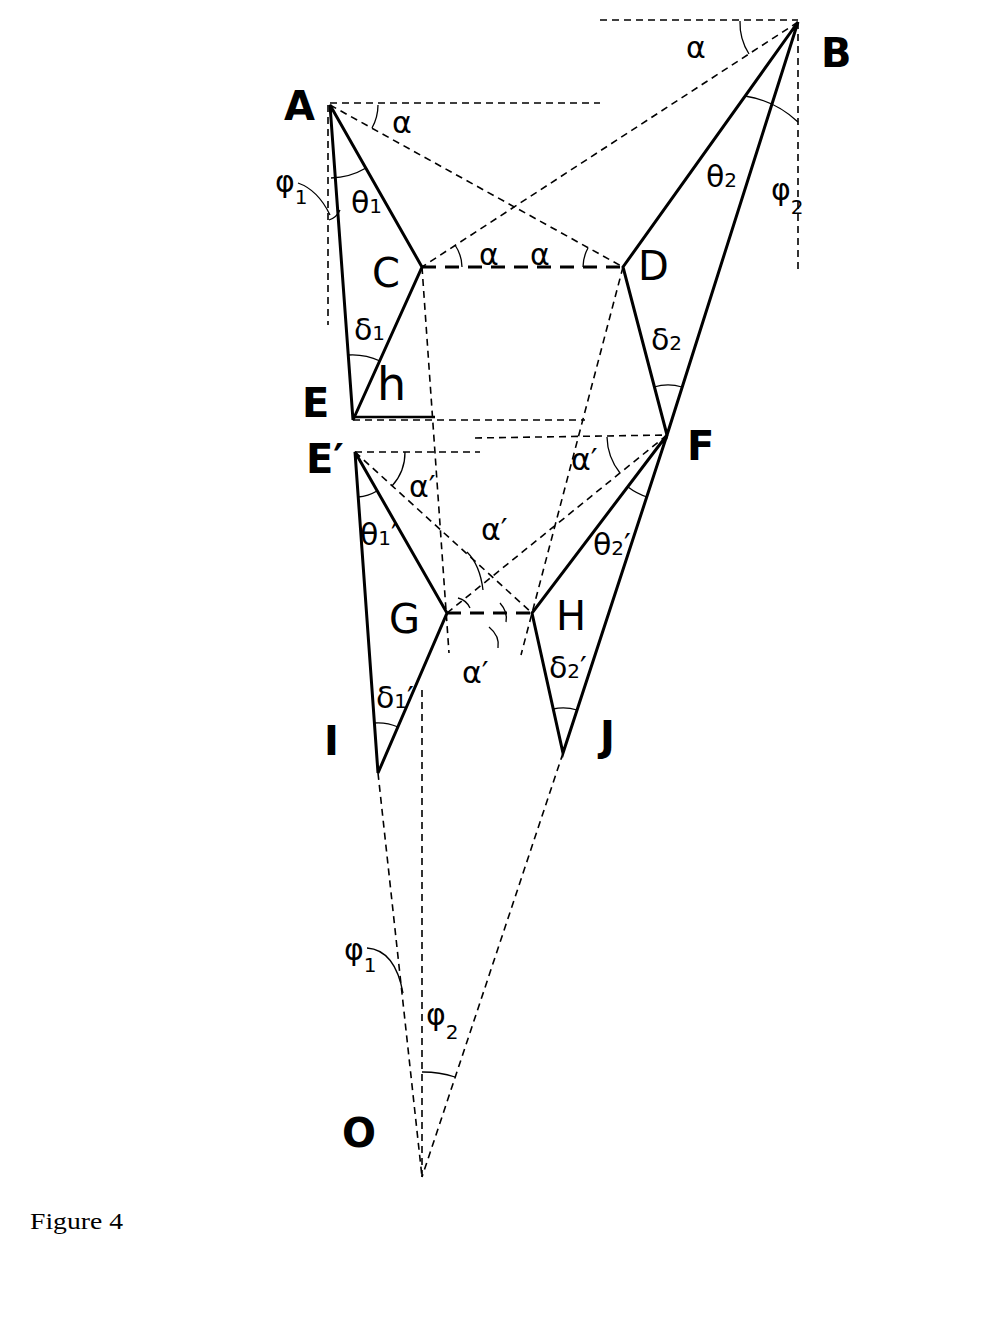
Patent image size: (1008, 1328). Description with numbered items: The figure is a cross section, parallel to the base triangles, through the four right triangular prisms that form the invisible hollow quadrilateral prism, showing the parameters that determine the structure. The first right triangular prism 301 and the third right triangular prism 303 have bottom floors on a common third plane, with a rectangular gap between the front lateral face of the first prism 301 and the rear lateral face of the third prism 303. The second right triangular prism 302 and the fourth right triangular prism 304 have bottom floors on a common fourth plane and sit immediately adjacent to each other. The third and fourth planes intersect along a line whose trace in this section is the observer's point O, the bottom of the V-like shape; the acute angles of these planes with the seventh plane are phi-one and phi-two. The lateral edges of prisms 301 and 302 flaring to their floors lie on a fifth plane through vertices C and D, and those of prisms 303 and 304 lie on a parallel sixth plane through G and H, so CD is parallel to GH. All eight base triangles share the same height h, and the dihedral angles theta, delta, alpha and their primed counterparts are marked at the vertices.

The first right triangular prism 301 is at (353, 276).
The second right triangular prism 302 is at (693, 235).
The third right triangular prism 303 is at (370, 598).
The fourth right triangular prism 304 is at (593, 630).